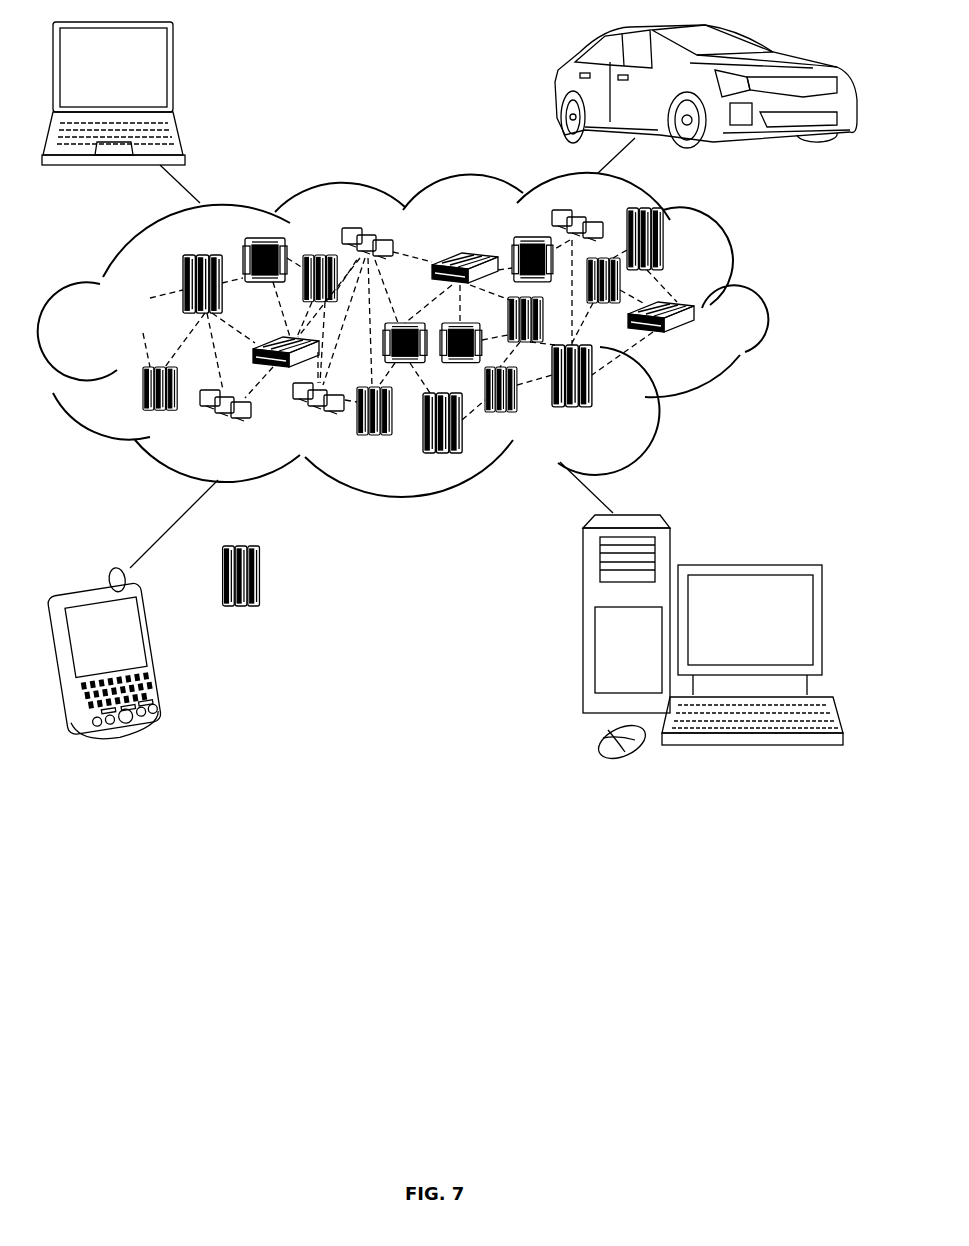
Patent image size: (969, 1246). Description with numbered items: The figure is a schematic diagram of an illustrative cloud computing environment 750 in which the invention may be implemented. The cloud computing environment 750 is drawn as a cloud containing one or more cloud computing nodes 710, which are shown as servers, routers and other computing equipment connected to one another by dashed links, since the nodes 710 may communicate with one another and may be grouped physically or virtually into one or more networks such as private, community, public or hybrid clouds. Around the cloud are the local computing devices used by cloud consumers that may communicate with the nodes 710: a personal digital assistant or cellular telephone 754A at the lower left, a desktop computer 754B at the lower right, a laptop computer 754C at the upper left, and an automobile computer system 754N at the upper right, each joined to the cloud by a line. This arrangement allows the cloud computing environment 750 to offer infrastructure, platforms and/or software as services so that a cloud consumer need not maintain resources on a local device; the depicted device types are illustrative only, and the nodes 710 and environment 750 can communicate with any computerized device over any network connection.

The laptop computer 754C is at (173, 72).
The automobile computer system 754N is at (557, 90).
The cloud computing environment 750 is at (750, 313).
The cloud computing nodes 710 is at (475, 407).
The personal digital assistant or cellular telephone 754A is at (165, 643).
The desktop computer 754B is at (748, 565).